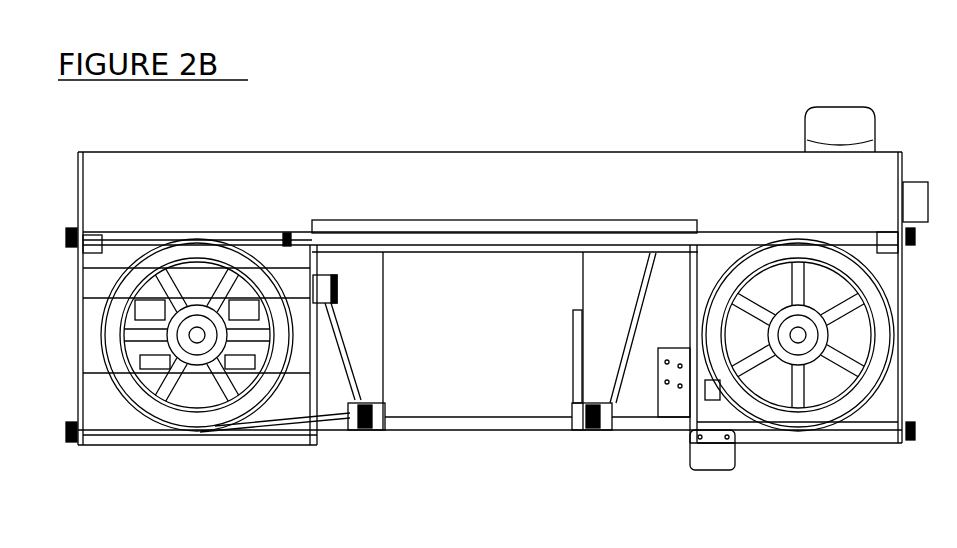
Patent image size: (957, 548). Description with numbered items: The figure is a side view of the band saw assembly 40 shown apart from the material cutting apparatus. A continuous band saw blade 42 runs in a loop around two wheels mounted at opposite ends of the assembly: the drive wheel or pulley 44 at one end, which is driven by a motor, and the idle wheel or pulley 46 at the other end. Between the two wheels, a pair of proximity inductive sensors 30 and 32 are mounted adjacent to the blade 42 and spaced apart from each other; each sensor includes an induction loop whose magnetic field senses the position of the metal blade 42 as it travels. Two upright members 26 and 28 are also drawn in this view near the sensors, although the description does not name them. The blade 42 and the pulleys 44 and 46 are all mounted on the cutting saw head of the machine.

The rear support post 26 is at (578, 288).
The front support post 28 is at (385, 308).
The proximity inductive sensor 30 is at (603, 432).
The proximity inductive sensor 32 is at (367, 432).
The band saw assembly 40 is at (480, 152).
The continuous band saw blade 42 is at (465, 432).
The drive wheel or pulley 44 is at (790, 252).
The idle wheel or pulley 46 is at (197, 270).